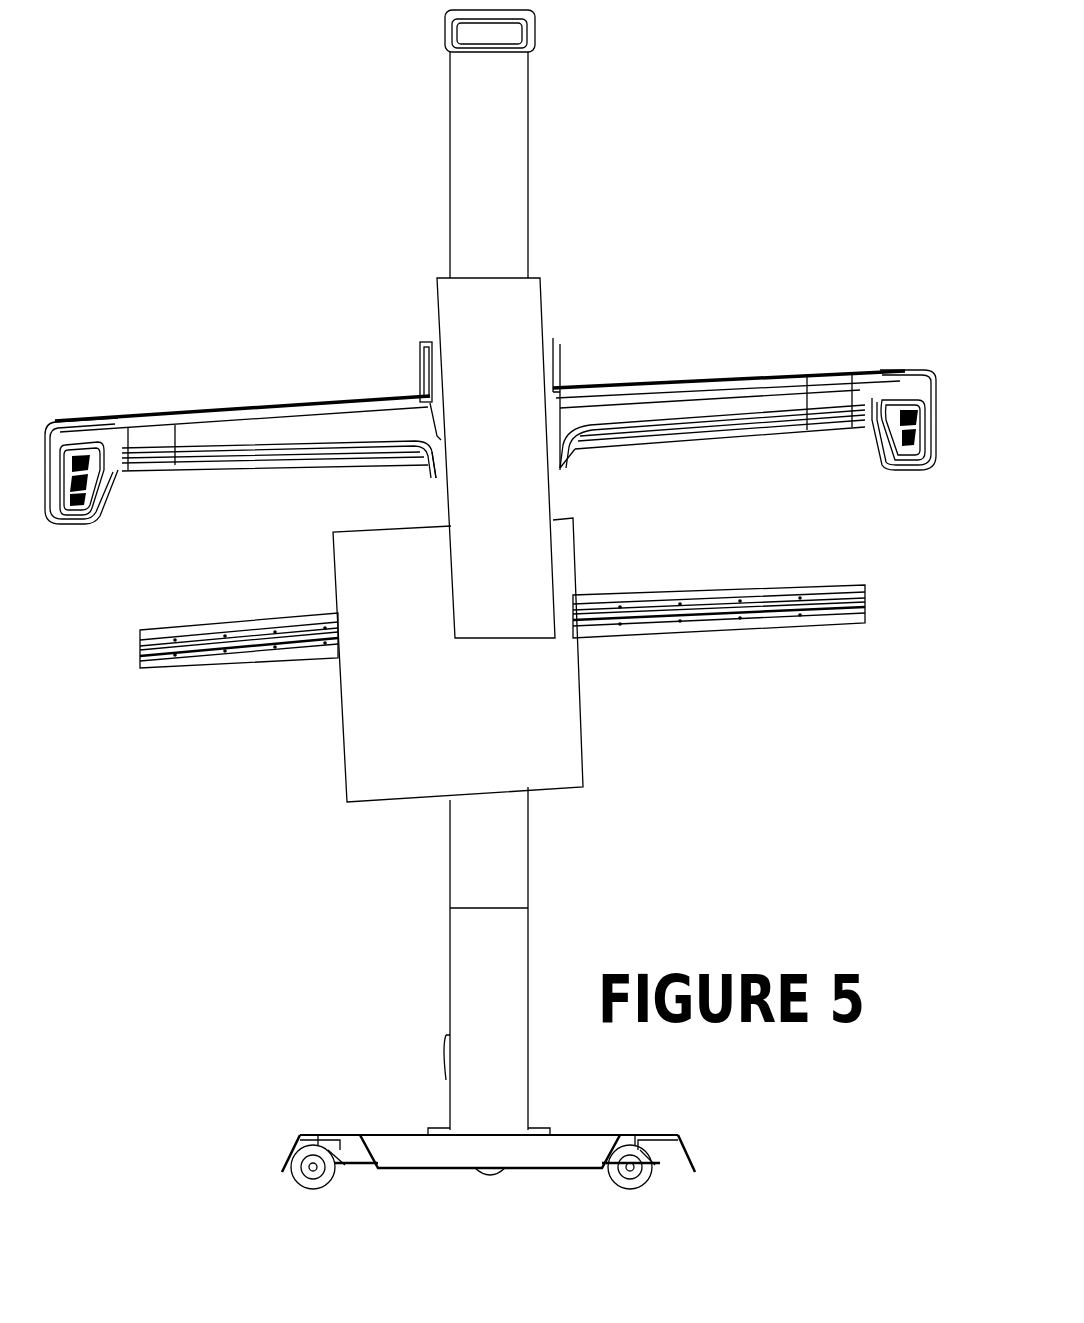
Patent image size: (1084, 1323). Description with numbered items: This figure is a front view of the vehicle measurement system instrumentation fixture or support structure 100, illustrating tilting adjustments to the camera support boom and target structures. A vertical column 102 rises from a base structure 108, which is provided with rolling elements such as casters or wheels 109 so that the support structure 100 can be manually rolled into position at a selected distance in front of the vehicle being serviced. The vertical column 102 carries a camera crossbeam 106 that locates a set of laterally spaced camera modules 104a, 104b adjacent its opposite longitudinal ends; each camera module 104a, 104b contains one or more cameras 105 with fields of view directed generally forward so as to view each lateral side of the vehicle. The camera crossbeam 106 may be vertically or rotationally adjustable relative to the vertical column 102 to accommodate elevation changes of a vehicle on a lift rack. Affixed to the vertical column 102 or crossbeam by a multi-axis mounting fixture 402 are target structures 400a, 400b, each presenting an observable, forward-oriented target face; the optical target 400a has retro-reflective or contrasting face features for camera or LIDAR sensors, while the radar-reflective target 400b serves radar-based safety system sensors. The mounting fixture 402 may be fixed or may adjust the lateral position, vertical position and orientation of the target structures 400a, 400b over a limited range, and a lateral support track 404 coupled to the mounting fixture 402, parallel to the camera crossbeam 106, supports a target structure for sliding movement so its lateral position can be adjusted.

The support structure 100 is at (508, 622).
The vertical column 102 is at (450, 170).
The camera module 104a is at (905, 372).
The camera module 104b is at (93, 422).
The camera 105 is at (85, 490).
The camera crossbeam 106 is at (690, 402).
The base structure 108 is at (352, 1125).
The casters or wheels 109 is at (300, 1180).
The target structure 400a is at (520, 690).
The target structure 400b is at (508, 478).
The multi-axis mounting fixture 402 is at (425, 370).
The lateral support track 404 is at (740, 632).